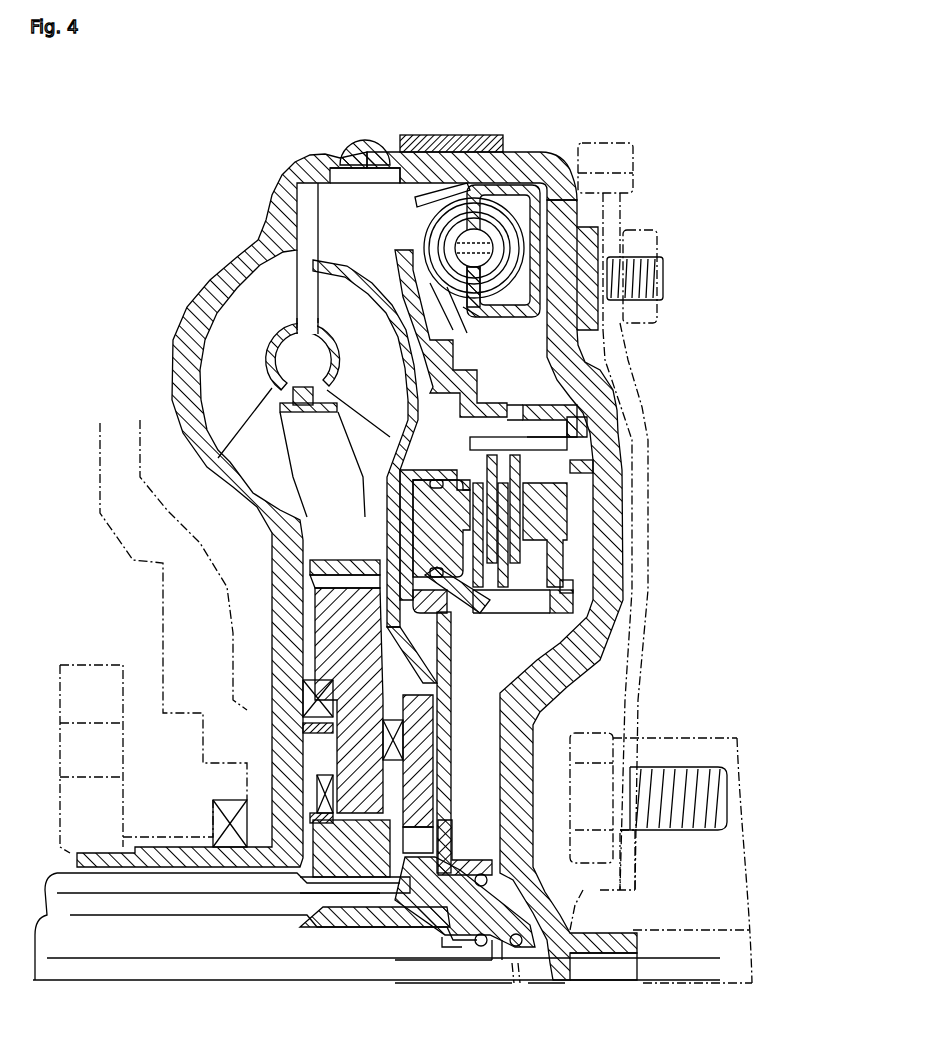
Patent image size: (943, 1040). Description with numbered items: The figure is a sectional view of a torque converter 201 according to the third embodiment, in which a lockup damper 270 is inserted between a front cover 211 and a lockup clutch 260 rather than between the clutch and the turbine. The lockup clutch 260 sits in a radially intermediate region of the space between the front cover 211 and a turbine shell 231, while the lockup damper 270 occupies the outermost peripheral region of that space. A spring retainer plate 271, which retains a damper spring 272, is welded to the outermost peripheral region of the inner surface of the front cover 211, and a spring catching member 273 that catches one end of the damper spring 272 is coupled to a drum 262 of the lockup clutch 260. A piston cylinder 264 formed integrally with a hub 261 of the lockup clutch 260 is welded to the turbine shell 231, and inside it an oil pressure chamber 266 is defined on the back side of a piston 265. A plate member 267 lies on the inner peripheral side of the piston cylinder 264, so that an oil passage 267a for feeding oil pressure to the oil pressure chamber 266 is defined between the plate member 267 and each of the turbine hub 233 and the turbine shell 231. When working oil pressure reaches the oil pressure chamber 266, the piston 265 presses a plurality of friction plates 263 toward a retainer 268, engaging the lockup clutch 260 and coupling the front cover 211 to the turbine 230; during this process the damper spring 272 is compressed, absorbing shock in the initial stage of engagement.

The torque converter 201 is at (613, 118).
The front cover 211 is at (600, 358).
The turbine 230 is at (360, 252).
The turbine shell 231 is at (327, 258).
The turbine hub 233 is at (418, 769).
The lockup clutch 260 is at (573, 515).
The hub 261 is at (480, 614).
The drum 262 is at (497, 440).
The friction plates 263 is at (505, 646).
The piston cylinder 264 is at (432, 470).
The piston 265 is at (415, 518).
The oil pressure chamber 266 is at (410, 478).
The plate member 267 is at (451, 724).
The oil passage 267a is at (432, 652).
The retainer 268 is at (538, 585).
The lockup damper 270 is at (516, 178).
The spring retainer plate 271 is at (518, 318).
The damper spring 272 is at (423, 280).
The spring catching member 273 is at (404, 256).